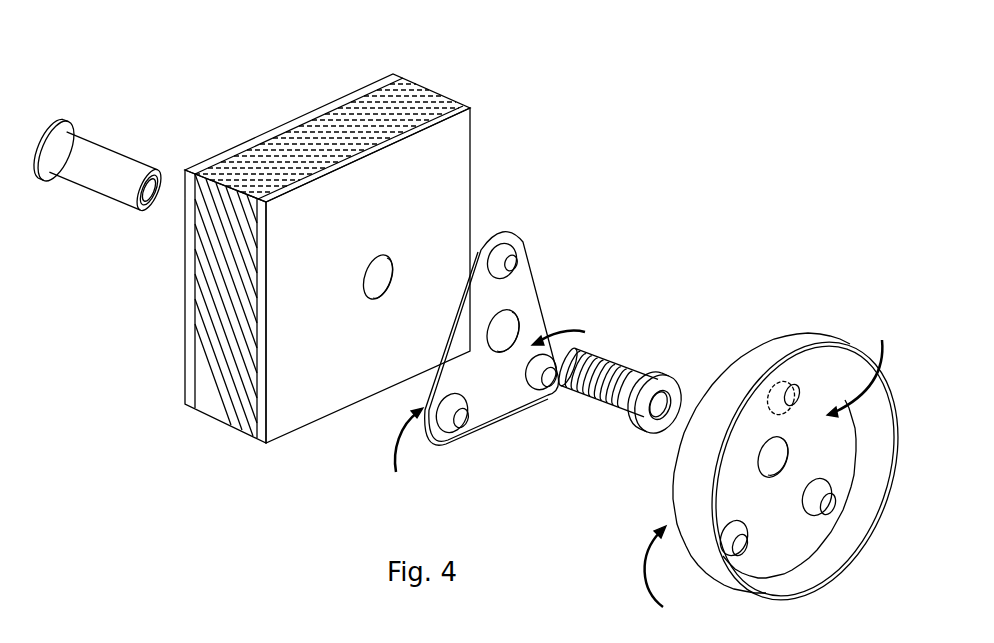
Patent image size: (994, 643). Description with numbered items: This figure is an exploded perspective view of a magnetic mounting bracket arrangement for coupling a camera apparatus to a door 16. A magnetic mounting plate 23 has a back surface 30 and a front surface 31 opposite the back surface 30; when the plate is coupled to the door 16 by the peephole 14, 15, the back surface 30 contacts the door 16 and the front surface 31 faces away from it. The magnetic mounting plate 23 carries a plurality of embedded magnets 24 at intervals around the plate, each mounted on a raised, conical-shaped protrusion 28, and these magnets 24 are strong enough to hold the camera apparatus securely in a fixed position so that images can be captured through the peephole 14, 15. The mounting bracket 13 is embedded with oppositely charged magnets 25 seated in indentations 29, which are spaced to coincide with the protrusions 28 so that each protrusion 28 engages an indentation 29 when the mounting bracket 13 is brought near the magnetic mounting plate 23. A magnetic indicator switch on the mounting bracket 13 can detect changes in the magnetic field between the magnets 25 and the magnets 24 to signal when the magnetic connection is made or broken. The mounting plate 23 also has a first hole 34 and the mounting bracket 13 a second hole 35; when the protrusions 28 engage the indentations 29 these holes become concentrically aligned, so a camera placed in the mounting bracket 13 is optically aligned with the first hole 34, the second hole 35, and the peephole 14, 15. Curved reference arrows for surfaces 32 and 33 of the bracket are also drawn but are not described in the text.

The mounting bracket 13 is at (812, 337).
The peephole 14 is at (637, 375).
The peephole 15 is at (88, 150).
The door 16 is at (298, 124).
The magnetic mounting plate 23 is at (530, 307).
The embedded magnets 24 is at (460, 417).
The oppositely charged magnets 25 is at (783, 393).
The raised shaped protrusions 28 is at (538, 372).
The indentations 29 is at (812, 498).
The back surface 30 is at (417, 455).
The front surface 31 is at (571, 333).
The inner side of disc 32 is at (863, 363).
The outer side of disc 33 is at (665, 577).
The first hole 34 is at (502, 328).
The second hole 35 is at (776, 458).